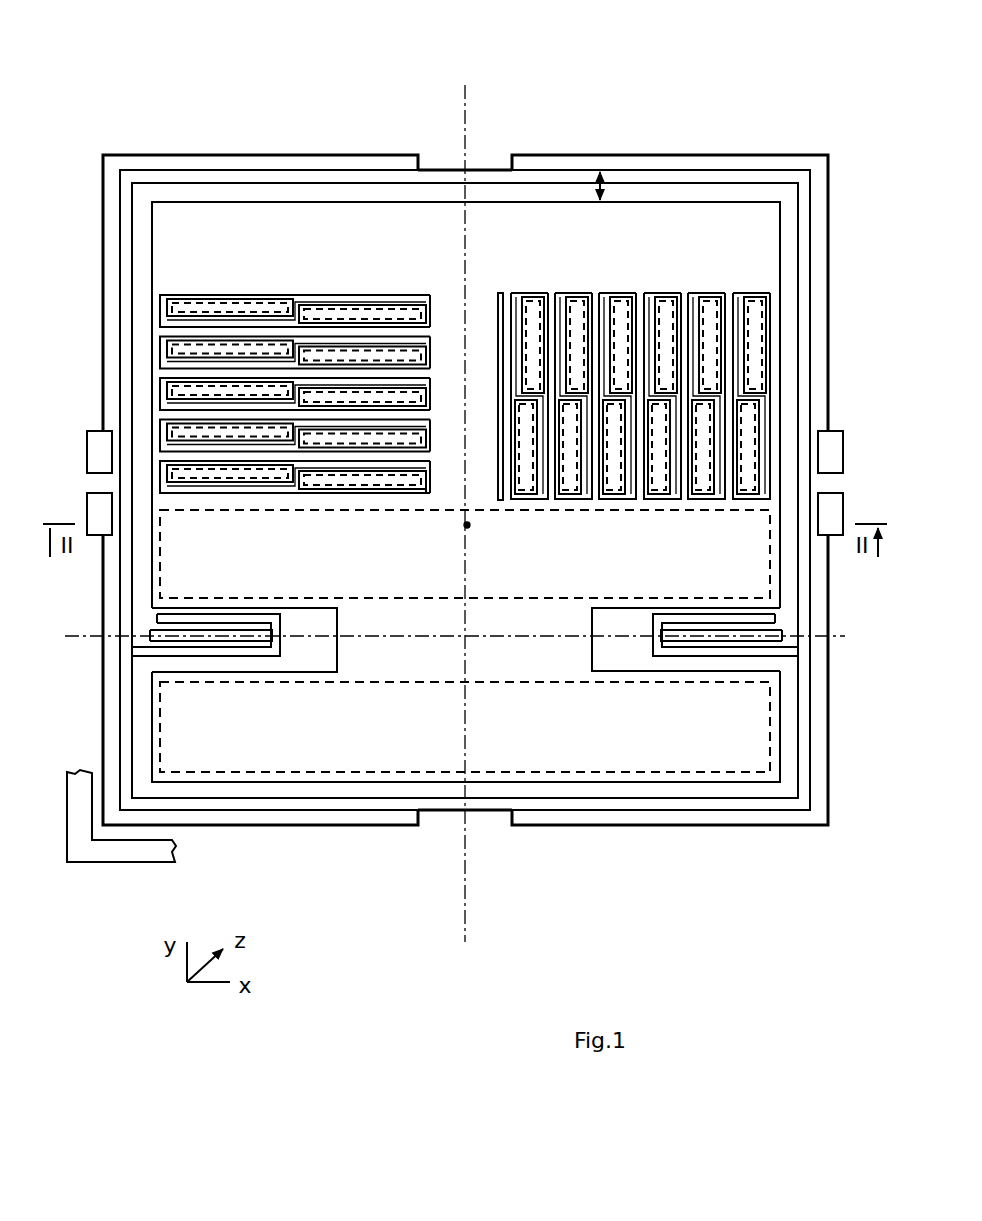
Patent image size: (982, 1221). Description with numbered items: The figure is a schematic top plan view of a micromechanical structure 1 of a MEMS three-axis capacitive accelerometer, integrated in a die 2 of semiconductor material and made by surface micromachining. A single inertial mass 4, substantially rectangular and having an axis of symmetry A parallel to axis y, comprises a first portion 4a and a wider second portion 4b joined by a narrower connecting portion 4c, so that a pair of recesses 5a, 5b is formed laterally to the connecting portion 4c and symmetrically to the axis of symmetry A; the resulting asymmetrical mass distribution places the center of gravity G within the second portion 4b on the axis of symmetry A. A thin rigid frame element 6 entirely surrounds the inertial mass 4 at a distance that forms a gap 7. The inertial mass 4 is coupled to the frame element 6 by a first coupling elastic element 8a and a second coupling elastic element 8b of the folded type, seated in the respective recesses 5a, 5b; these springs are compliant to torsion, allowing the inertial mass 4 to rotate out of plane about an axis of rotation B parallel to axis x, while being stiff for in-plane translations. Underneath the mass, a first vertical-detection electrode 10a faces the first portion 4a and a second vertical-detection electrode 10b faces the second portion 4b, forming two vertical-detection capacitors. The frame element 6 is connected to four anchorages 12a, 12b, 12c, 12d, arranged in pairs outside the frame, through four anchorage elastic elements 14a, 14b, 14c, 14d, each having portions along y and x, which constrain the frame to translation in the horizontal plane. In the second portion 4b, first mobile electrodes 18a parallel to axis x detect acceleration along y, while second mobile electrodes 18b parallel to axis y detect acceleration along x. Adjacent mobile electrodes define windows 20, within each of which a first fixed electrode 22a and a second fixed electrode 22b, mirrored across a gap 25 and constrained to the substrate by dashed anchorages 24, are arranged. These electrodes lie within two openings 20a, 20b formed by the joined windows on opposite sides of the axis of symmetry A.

The micromechanical structure 1 is at (150, 103).
The die 2 is at (92, 857).
The inertial mass 4 is at (454, 427).
The first portion 4a is at (775, 725).
The second portion 4b is at (750, 218).
The connecting portion 4c is at (555, 630).
The first recess 5a is at (332, 658).
The second recess 5b is at (598, 658).
The frame element 6 is at (447, 160).
The gap 7 is at (601, 172).
The first coupling elastic element 8a is at (150, 655).
The second coupling elastic element 8b is at (772, 657).
The first vertical-detection electrode 10a is at (175, 735).
The second vertical-detection electrode 10b is at (168, 565).
The anchorage 12a is at (95, 512).
The anchorage 12b is at (835, 515).
The anchorage 12c is at (833, 455).
The anchorage 12d is at (97, 455).
The anchorage elastic element 14a is at (241, 826).
The anchorage elastic element 14b is at (722, 826).
The anchorage elastic element 14c is at (735, 155).
The anchorage elastic element 14d is at (275, 155).
The first mobile electrodes 18a is at (437, 338).
The second mobile electrodes 18b is at (553, 292).
The window 20 is at (163, 340).
The opening 20a is at (428, 500).
The opening 20b is at (523, 500).
The first fixed electrode 22a is at (223, 345).
The second fixed electrode 22b is at (380, 358).
The anchorage 24 is at (302, 320).
The gap 25 is at (188, 445).
The axis of symmetry A is at (465, 870).
The axis of rotation B is at (836, 636).
The center of gravity G is at (478, 530).